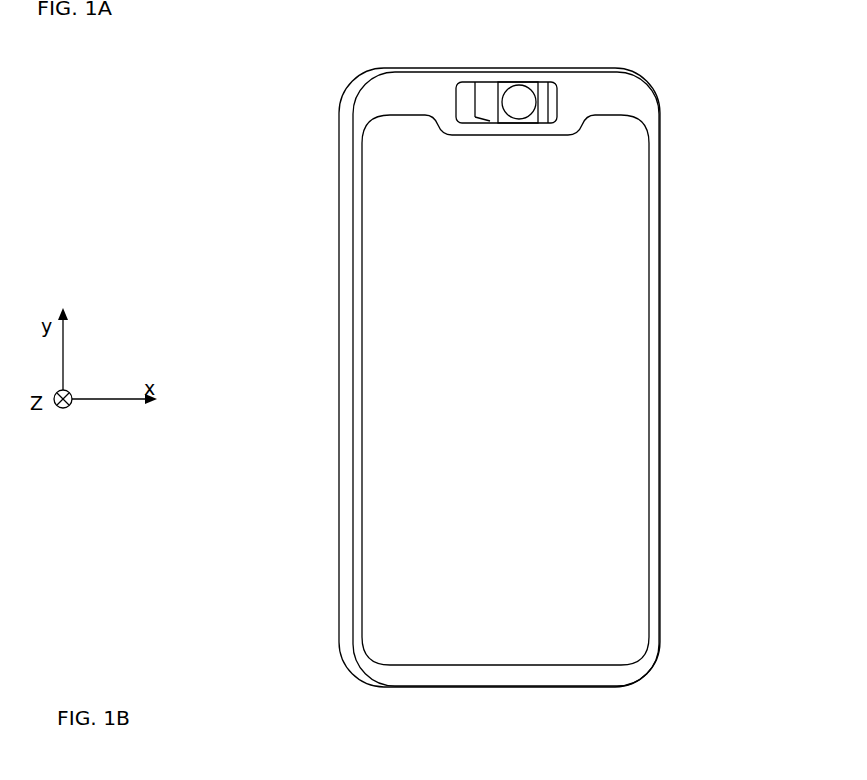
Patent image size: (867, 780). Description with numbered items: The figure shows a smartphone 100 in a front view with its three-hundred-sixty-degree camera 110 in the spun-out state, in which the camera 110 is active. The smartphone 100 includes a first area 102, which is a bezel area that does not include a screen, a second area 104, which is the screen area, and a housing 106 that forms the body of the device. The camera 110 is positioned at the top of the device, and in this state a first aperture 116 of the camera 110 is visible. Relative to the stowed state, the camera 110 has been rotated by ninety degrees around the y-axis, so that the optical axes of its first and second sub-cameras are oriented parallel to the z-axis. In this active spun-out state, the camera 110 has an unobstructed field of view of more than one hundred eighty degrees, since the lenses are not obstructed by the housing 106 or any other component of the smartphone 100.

The smartphone 100 is at (206, 205).
The first area 102 is at (633, 108).
The second area 104 is at (600, 388).
The housing 106 is at (665, 247).
The 360-degree camera 110 is at (600, 63).
The first aperture 116 is at (513, 74).